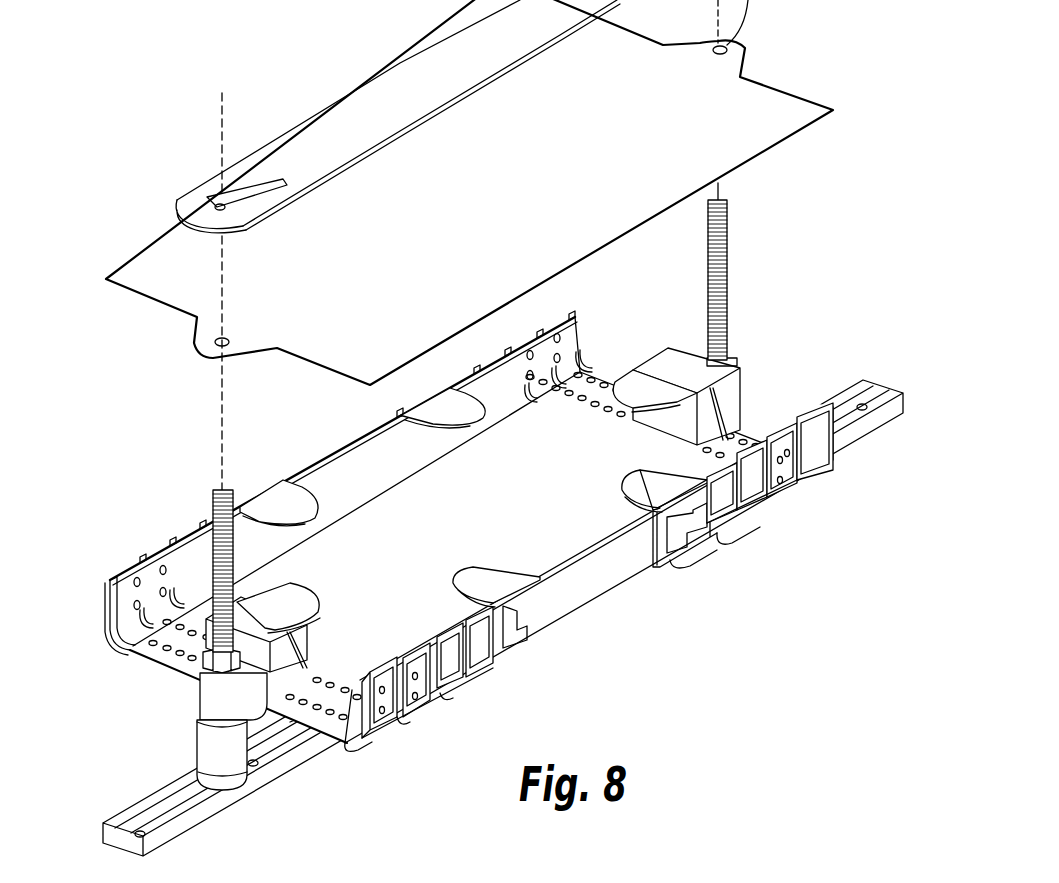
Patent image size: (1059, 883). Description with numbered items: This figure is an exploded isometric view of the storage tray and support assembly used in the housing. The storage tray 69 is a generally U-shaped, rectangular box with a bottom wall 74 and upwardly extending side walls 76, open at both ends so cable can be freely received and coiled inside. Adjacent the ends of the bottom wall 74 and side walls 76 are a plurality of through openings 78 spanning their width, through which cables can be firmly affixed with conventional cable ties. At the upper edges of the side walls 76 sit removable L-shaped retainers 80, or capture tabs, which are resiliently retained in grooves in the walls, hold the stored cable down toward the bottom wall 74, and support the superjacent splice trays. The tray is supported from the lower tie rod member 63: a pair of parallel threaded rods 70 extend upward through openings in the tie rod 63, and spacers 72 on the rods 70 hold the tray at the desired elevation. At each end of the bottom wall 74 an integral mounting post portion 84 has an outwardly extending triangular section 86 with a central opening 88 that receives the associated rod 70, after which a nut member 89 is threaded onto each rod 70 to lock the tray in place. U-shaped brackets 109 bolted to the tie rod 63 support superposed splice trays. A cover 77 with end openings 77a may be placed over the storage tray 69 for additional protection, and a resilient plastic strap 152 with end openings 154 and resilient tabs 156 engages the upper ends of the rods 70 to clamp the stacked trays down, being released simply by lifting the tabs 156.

The lower tie rod member 63 is at (327, 742).
The storage tray 69 is at (185, 527).
The threaded rods 70 is at (728, 228).
The spacers 72 is at (233, 770).
The bottom wall 74 is at (470, 521).
The side walls 76 is at (330, 490).
The cover 77 is at (783, 100).
The end openings 77a is at (228, 340).
The through openings 78 is at (607, 379).
The L-shaped retainers 80 is at (647, 381).
The mounting post portions 84 is at (297, 727).
The triangular section 86 is at (203, 700).
The central opening 88 is at (197, 730).
The nut member 89 is at (733, 358).
The brackets 109 is at (450, 703).
The resilient plastic strap 152 is at (400, 87).
The end openings 154 is at (216, 206).
The resilient tabs 156 is at (244, 187).